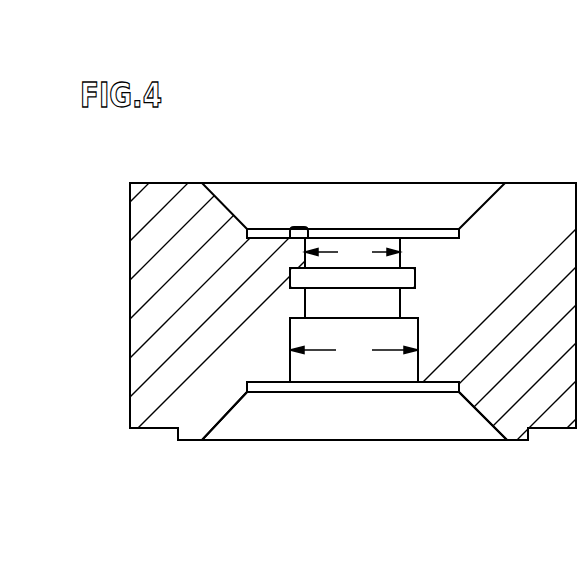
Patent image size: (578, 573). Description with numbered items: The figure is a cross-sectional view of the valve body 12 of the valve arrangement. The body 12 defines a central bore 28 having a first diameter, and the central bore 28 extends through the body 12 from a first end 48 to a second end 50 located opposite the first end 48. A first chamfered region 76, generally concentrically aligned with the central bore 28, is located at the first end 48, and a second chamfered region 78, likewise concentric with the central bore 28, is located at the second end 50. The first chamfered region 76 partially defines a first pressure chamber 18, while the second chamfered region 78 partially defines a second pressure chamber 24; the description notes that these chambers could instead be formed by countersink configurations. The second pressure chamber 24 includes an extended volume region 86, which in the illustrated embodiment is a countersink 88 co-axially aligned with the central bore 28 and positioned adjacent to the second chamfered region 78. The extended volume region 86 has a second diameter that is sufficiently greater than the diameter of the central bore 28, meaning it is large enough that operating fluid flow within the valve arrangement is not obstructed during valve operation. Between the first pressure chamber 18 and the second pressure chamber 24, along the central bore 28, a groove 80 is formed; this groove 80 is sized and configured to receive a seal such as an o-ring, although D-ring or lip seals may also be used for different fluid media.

The valve body 12 is at (458, 81).
The first pressure chamber 18 is at (384, 146).
The second pressure chamber 24 is at (443, 469).
The central bore 28 is at (375, 305).
The first end 48 is at (165, 182).
The second end 50 is at (191, 441).
The first chamfered region 76 is at (477, 212).
The second chamfered region 78 is at (223, 418).
The groove 80 is at (290, 273).
The extended volume region 86 is at (288, 365).
The countersink 88 is at (288, 363).